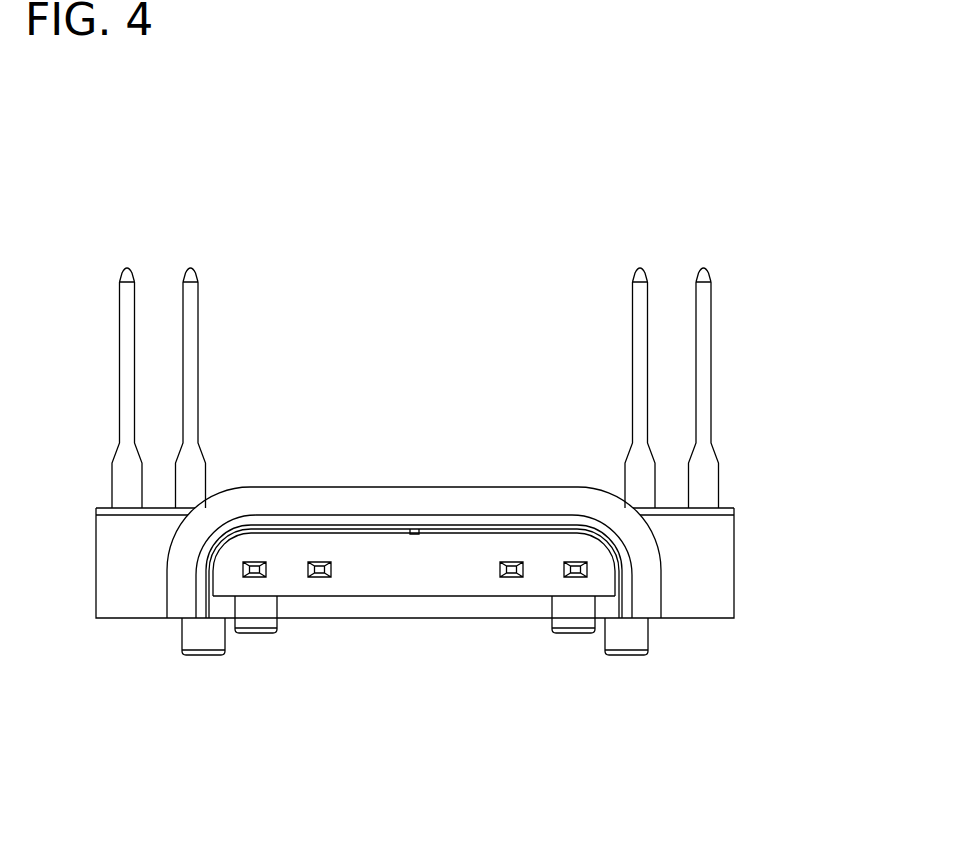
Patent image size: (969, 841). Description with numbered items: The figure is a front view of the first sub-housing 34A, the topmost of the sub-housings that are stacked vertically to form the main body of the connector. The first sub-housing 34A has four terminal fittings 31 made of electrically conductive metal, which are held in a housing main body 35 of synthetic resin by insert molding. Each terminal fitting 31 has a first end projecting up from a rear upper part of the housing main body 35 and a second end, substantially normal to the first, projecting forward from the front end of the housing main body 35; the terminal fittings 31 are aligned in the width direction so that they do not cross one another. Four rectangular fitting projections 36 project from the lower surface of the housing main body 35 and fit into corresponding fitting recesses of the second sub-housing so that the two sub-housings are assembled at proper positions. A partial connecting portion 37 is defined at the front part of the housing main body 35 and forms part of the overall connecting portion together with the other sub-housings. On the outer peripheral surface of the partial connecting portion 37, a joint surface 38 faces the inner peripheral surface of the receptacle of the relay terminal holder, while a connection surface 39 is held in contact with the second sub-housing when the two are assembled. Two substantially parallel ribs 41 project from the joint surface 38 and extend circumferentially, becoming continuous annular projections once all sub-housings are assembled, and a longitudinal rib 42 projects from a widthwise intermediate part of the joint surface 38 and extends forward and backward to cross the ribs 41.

The terminal fitting 31 is at (198, 288).
The first sub-housing 34A is at (350, 203).
The housing main body 35 is at (493, 495).
The fitting projection 36 is at (252, 620).
The partial connecting portion 37 is at (649, 550).
The joint surface 38 is at (333, 532).
The connection surface 39 is at (466, 598).
The rib 41 is at (382, 527).
The longitudinal rib 42 is at (415, 530).